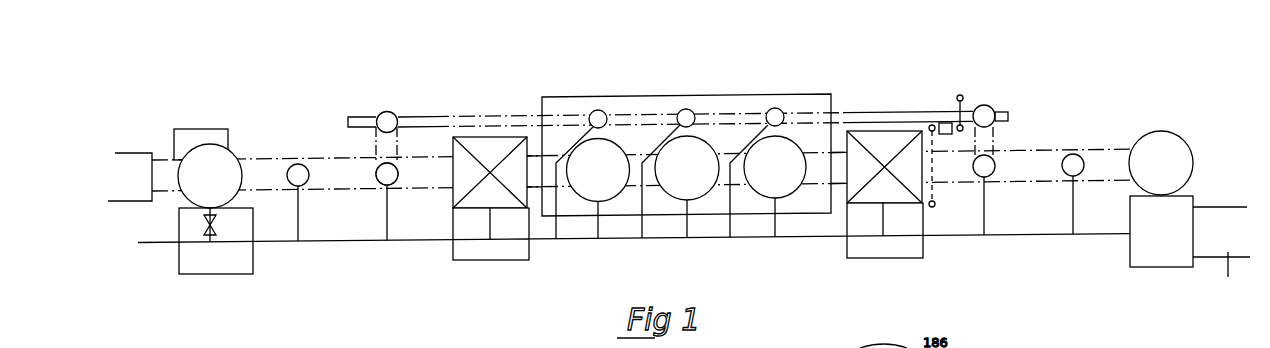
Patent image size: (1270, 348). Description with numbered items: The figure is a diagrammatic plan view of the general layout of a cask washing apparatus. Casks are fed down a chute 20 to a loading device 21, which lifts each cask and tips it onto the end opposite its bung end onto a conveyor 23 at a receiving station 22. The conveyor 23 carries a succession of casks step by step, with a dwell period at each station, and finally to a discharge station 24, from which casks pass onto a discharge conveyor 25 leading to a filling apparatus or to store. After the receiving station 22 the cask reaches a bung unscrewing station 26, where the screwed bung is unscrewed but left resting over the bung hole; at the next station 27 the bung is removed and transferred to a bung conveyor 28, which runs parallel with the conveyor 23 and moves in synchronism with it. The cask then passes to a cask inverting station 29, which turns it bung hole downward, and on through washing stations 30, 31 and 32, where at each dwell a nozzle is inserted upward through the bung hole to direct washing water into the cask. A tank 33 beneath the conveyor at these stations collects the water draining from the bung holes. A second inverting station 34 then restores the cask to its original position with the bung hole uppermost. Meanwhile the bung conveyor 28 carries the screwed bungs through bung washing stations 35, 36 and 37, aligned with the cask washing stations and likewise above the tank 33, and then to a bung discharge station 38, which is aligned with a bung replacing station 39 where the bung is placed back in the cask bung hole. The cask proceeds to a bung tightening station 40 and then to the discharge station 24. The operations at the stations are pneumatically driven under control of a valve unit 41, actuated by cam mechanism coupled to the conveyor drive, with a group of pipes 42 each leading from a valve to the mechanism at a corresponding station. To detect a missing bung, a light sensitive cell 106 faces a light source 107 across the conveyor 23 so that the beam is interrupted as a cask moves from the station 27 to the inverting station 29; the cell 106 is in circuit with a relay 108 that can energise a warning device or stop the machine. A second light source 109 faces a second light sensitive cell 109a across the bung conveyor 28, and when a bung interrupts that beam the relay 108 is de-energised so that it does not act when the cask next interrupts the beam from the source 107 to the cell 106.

The chute 20 is at (1221, 252).
The loading device 21 is at (1155, 268).
The receiving station 22 is at (1180, 133).
The conveyor 23 is at (1110, 148).
The discharge station 24 is at (197, 127).
The discharge conveyor 25 is at (140, 150).
The bung unscrewing station 26 is at (1073, 153).
The bung removing station 27 is at (996, 160).
The bung conveyor 28 is at (858, 110).
The cask inverting station 29 is at (870, 200).
The washing station 30 is at (767, 192).
The washing station 31 is at (680, 193).
The washing station 32 is at (588, 195).
The tank 33 is at (738, 94).
The second inverting station 34 is at (478, 145).
The bung washing station 35 is at (778, 108).
The bung washing station 36 is at (690, 108).
The bung washing station 37 is at (600, 110).
The bung discharge station 38 is at (390, 112).
The bung replacing station 39 is at (380, 183).
The bung tightening station 40 is at (298, 164).
The valve unit 41 is at (213, 228).
The group of pipes 42 is at (418, 242).
The light sensitive cell 106 is at (930, 126).
The light source 107 is at (935, 207).
The relay 108 is at (938, 122).
The second light source 109 is at (962, 95).
The second light sensitive cell 109a is at (969, 121).